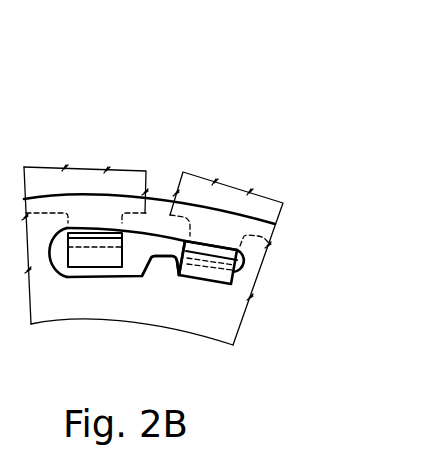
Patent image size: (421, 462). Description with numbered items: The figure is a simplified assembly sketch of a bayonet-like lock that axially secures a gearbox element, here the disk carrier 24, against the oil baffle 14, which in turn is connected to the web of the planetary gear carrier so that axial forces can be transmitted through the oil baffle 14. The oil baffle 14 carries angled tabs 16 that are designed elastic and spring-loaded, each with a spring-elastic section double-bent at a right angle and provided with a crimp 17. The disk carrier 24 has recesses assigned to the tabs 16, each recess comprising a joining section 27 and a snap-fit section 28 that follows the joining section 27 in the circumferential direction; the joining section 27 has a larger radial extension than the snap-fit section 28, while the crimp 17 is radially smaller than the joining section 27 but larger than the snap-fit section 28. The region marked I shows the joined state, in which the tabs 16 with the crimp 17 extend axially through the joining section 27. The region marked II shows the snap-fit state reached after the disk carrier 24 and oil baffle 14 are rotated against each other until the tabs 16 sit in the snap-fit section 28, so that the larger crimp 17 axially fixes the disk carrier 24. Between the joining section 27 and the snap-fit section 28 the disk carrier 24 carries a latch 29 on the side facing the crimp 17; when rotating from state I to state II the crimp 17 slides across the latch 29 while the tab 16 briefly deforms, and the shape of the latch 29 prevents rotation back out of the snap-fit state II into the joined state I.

The joined state I is at (63, 149).
The snap-fit state II is at (256, 168).
The oil baffle 14 is at (276, 211).
The angled tab 16 is at (88, 242).
The crimp 17 is at (225, 277).
The disk carrier 24 is at (254, 252).
The joining section 27 is at (138, 240).
The snap-fit section 28 is at (177, 240).
The latch 29 is at (168, 283).